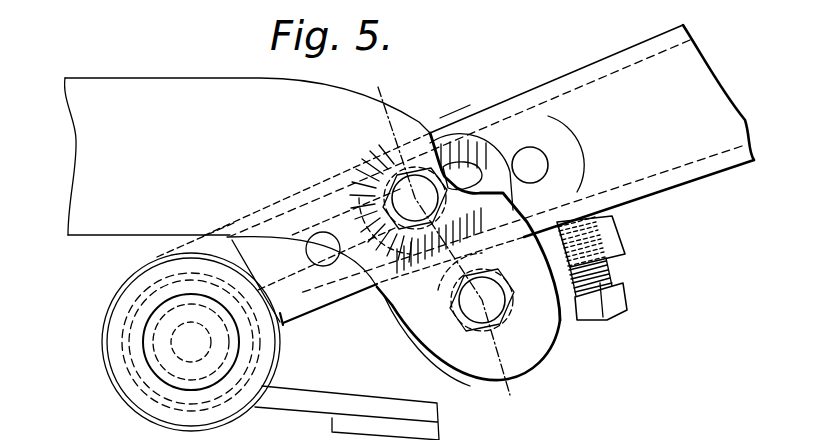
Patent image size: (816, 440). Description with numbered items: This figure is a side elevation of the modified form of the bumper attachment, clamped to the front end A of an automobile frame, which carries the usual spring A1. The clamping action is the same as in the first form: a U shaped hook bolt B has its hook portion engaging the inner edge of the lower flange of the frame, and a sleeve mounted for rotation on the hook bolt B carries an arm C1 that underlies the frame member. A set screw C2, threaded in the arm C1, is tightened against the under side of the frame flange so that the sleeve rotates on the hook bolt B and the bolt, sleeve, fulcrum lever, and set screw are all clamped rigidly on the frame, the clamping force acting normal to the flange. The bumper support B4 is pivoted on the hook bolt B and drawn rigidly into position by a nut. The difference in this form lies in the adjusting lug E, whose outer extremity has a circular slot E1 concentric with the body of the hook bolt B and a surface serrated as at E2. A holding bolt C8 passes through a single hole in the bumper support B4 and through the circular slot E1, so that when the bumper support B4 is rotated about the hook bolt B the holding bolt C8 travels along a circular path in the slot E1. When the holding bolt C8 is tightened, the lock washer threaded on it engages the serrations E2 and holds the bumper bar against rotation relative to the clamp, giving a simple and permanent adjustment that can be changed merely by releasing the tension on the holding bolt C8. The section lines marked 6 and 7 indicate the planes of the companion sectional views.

The front end of automobile frame A is at (711, 90).
The spring A1 is at (358, 400).
The U shaped hook bolt B is at (497, 318).
The bumper support B4 is at (161, 90).
The arm C1 is at (618, 226).
The set screw C2 is at (614, 270).
The holding bolt C8 is at (402, 200).
The adjusting lug E is at (489, 157).
The circular slot E1 is at (508, 172).
The serrations E2 is at (463, 133).
The section line 6 is at (445, 104).
The section line 7- 7 is at (516, 388).